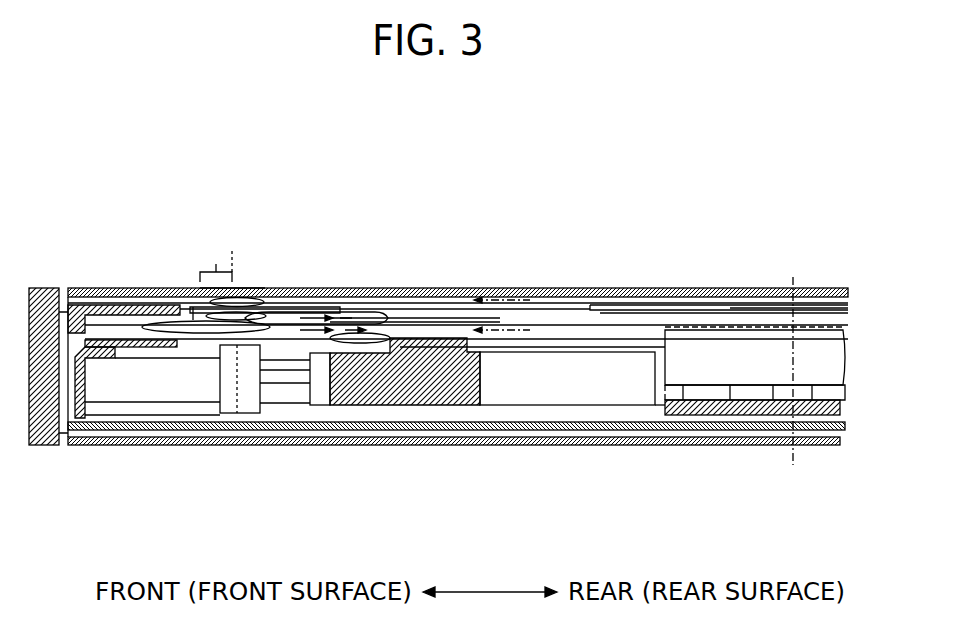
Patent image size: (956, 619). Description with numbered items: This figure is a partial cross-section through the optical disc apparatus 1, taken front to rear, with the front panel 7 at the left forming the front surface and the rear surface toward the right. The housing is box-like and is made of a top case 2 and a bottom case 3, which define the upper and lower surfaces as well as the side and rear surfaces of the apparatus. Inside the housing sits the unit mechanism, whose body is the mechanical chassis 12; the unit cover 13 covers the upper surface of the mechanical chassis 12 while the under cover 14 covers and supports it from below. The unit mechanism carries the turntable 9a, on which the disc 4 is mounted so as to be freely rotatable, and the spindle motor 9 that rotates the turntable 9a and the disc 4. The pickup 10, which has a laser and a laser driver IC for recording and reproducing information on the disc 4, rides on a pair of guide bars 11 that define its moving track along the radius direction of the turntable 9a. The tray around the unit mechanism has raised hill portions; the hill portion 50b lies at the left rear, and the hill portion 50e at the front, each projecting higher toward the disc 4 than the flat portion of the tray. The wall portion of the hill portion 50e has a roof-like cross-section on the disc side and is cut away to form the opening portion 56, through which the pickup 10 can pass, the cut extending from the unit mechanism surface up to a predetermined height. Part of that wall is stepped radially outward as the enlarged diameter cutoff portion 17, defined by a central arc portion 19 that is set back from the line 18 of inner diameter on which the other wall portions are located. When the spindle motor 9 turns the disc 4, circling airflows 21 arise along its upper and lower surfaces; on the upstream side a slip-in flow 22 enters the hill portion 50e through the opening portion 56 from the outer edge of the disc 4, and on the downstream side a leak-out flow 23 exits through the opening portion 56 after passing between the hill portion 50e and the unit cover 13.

The optical disc apparatus 1 is at (413, 145).
The top case 2 is at (705, 305).
The bottom case 3 is at (767, 445).
The disc 4 is at (460, 320).
The front panel 7 is at (45, 290).
The spindle motor 9 is at (802, 413).
The turntable 9a is at (803, 348).
The pickup 10 is at (400, 405).
The guide bars 11 is at (302, 380).
The mechanical chassis 12 is at (88, 390).
The unit cover 13 is at (563, 350).
The under cover 14 is at (722, 433).
The enlarged diameter cutoff portion 17 is at (216, 254).
The line of inner diameter 18 is at (232, 283).
The arc portion 19 is at (193, 307).
The circling airflows 21 is at (505, 300).
The slip-in flow 22 is at (255, 293).
The leak-out flow 23 is at (377, 337).
The hill portion 50b is at (650, 305).
The hill portion 50e is at (108, 307).
The opening portion 56 is at (240, 420).